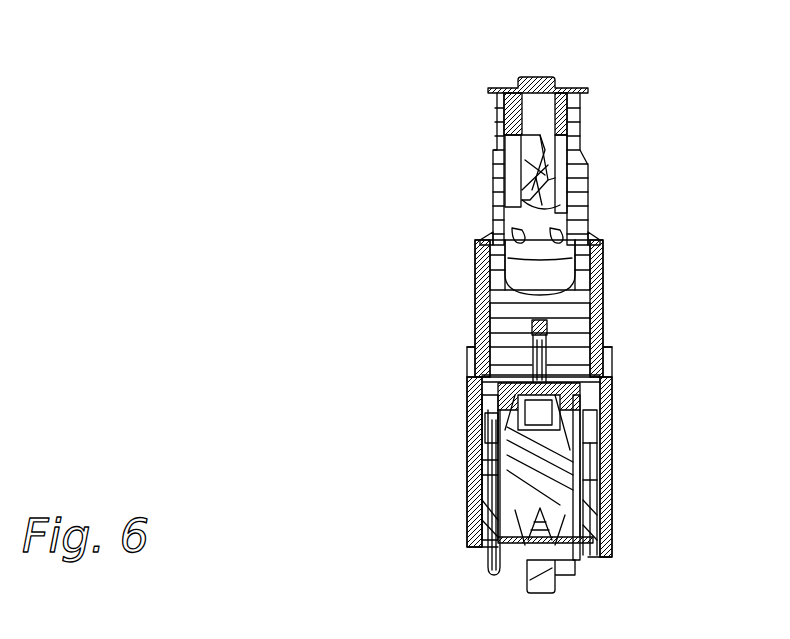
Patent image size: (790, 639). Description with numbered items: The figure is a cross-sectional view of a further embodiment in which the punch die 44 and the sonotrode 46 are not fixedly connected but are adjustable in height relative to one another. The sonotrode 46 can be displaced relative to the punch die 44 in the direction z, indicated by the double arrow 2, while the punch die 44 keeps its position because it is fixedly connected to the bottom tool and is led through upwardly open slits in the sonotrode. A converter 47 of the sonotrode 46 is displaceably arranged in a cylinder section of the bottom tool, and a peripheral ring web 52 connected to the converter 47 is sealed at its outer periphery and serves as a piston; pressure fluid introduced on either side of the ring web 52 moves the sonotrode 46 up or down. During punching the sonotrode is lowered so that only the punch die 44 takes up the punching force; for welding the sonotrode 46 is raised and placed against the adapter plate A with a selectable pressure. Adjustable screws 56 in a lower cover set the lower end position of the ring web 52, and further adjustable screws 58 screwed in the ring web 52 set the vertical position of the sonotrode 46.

The longitudinal axis direction 2 is at (539, 18).
The adapter plate A is at (583, 88).
The punch die 44 is at (495, 176).
The sonotrode 46 is at (590, 300).
The converter 47 is at (612, 458).
The peripheral ring web 52 is at (470, 460).
The adjustable screws 56 is at (470, 565).
The further adjustable screws 58 is at (600, 554).